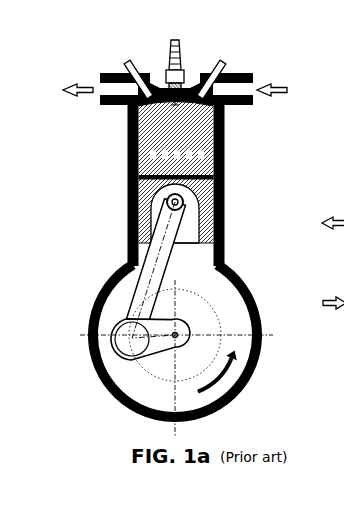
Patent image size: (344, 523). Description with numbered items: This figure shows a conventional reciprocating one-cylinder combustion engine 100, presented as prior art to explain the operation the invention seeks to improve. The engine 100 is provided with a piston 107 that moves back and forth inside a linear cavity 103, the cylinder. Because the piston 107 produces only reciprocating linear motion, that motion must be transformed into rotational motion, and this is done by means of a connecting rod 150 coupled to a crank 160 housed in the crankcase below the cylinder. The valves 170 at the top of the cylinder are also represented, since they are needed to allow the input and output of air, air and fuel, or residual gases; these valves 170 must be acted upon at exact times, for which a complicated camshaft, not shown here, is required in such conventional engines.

The combustion engine 100 is at (203, 238).
The linear cavity 103 is at (150, 135).
The piston 107 is at (150, 202).
The connecting rod 150 is at (142, 293).
The crank 160 is at (137, 360).
The valves 170 is at (233, 102).